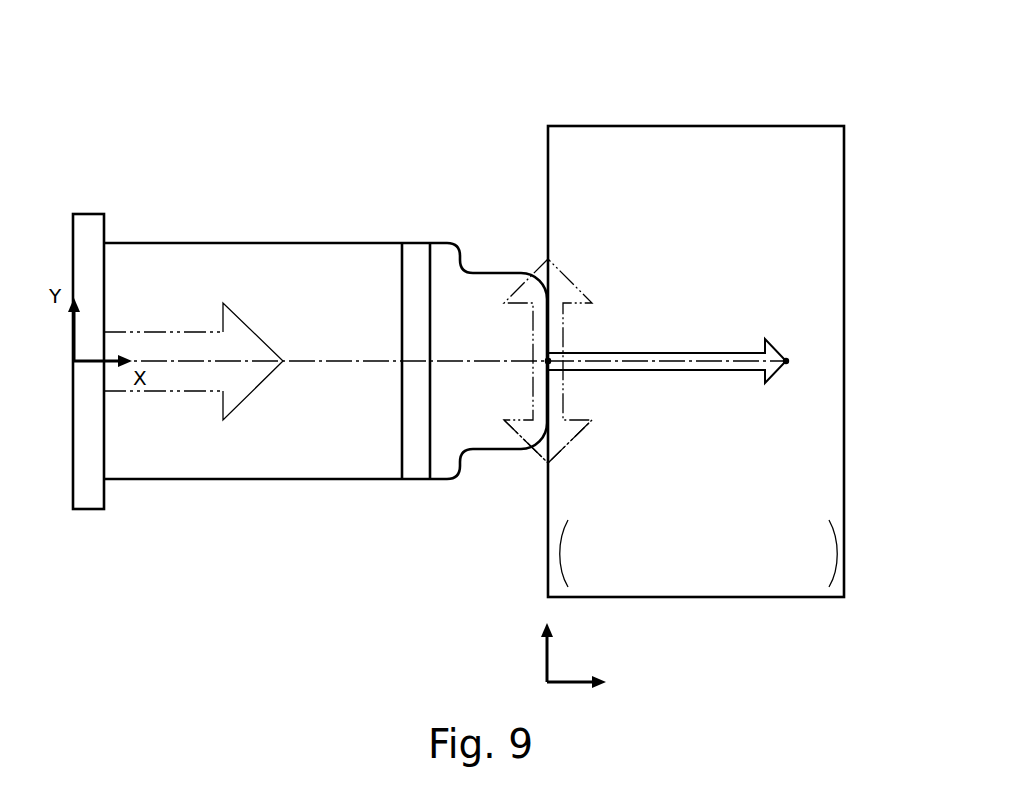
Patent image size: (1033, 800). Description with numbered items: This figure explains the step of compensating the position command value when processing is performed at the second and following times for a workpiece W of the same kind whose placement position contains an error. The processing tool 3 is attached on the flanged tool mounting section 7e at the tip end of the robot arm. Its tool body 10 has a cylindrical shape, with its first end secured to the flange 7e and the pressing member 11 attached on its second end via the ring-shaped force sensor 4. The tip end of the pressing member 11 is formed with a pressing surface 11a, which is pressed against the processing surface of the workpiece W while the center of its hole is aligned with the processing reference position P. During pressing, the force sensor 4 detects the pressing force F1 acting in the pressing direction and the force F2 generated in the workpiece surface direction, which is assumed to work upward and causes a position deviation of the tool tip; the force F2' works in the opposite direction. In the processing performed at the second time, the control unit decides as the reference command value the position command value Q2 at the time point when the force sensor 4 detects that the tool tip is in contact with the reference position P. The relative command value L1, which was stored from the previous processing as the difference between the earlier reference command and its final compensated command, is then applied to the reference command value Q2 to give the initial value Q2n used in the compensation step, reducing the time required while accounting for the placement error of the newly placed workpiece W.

The processing tool 3 is at (325, 357).
The tool body 10 is at (263, 480).
The force sensor 4 is at (413, 480).
The pressing member 11 is at (488, 412).
The pressing surface 11a is at (547, 412).
The flanged tool mounting section 7e is at (88, 512).
The workpiece W is at (784, 126).
The processing reference position P is at (548, 361).
The position command value Q2 is at (548, 361).
The initial value Q2n is at (787, 358).
The relative command value L1 is at (672, 372).
The pressing force F1 is at (148, 402).
The force causing a position deviation F2 is at (572, 339).
The force working in a direction opposite to F2 F2' is at (573, 465).